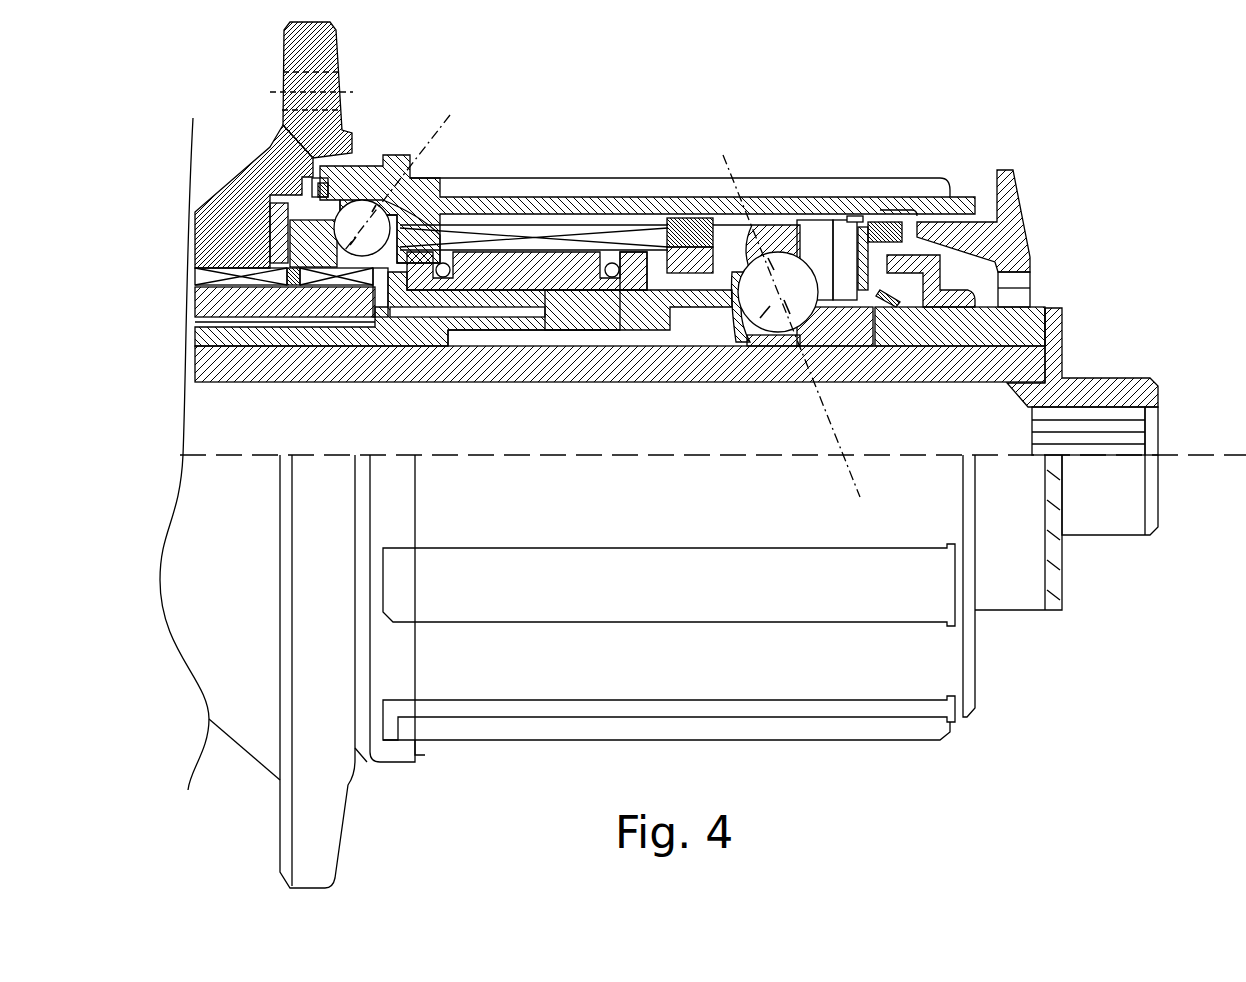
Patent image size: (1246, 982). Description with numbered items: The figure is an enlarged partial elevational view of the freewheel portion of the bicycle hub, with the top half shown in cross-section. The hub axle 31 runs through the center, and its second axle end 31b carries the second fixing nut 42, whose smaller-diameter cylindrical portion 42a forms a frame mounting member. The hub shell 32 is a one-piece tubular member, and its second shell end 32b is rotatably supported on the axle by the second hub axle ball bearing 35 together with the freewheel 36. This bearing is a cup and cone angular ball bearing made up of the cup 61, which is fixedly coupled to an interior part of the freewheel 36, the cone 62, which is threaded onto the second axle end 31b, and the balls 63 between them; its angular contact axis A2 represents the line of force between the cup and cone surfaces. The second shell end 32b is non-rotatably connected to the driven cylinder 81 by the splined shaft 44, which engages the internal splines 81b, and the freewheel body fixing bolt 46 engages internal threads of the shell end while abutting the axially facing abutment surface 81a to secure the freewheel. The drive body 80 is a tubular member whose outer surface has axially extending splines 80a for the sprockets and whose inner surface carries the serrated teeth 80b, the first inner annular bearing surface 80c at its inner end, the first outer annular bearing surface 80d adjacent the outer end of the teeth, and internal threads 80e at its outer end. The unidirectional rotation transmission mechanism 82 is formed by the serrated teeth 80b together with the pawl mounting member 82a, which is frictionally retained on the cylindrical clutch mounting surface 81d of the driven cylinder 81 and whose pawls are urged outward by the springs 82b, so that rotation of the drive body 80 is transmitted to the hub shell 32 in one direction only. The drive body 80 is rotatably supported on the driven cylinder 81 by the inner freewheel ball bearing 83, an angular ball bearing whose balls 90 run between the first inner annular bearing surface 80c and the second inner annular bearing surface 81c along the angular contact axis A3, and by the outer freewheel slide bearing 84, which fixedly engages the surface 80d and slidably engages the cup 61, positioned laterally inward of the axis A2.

The hub axle 31 is at (250, 388).
The second axle end 31b is at (967, 358).
The hub shell 32 is at (357, 60).
The second shell end 32b is at (255, 150).
The second hub axle ball bearing 35 is at (853, 215).
The freewheel 36 is at (903, 115).
The second fixing nut 42 is at (1063, 294).
The cylindrical portion 42a is at (1120, 378).
The splined shaft 44 is at (200, 308).
The freewheel body fixing bolt 46 is at (480, 332).
The second outer race or cup 61 is at (827, 224).
The second inner race or cone 62 is at (853, 350).
The second rolling members or balls 63 is at (750, 330).
The drive body 80 is at (601, 230).
The axially extending splines 80a is at (628, 710).
The serrated teeth 80b is at (508, 271).
The first inner annular bearing surface 80c is at (374, 190).
The first outer annular bearing surface 80d is at (712, 240).
The internal threads 80e is at (990, 222).
The driven cylinder 81 is at (543, 288).
The axially facing abutment surface 81a is at (628, 272).
The internal splines 81b is at (338, 283).
The second inner annular bearing surface 81c is at (282, 188).
The cylindrical clutch mounting surface 81d is at (567, 157).
The unidirectional rotation transmission mechanism 82 is at (650, 245).
The pawl mounting member 82a is at (562, 278).
The springs 82b is at (436, 278).
The inner freewheel ball bearing 83 is at (340, 213).
The outer freewheel slide bearing 84 is at (683, 207).
The balls 90 is at (380, 226).
The angular contact axis A2 is at (828, 418).
The angular contact axis A3 is at (445, 128).